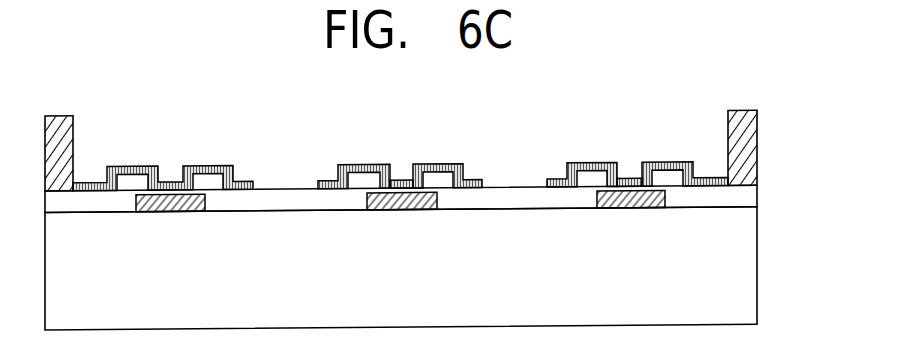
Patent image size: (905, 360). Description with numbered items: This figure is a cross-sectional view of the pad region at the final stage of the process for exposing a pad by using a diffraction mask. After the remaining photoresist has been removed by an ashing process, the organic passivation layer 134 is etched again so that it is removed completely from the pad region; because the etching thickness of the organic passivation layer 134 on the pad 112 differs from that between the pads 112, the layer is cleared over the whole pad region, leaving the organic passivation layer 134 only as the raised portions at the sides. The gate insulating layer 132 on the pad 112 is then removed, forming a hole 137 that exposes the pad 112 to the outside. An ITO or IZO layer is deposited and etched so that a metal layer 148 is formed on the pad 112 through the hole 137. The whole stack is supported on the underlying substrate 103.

The substrate 103 is at (745, 268).
The pad 112 is at (628, 183).
The gate insulating layer 132 is at (748, 200).
The organic passivation layer 134 is at (750, 145).
The hole 137 is at (400, 161).
The metal layer 148 is at (352, 164).